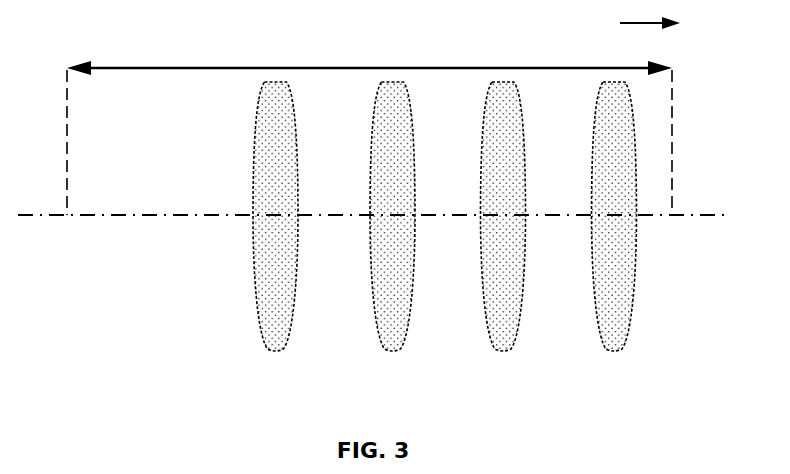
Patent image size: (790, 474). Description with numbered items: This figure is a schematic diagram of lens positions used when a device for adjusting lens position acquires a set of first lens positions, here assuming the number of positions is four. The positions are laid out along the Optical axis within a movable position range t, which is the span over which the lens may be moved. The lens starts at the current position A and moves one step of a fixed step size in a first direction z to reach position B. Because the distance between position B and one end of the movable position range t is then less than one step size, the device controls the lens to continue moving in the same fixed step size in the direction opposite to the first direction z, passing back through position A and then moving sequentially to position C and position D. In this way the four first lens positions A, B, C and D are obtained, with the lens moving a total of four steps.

The position A is at (503, 346).
The position B is at (614, 346).
The position C is at (392, 346).
The position D is at (276, 346).
The movable position range t is at (369, 128).
The first direction z is at (650, 31).
The optical axis Optical axis is at (126, 232).